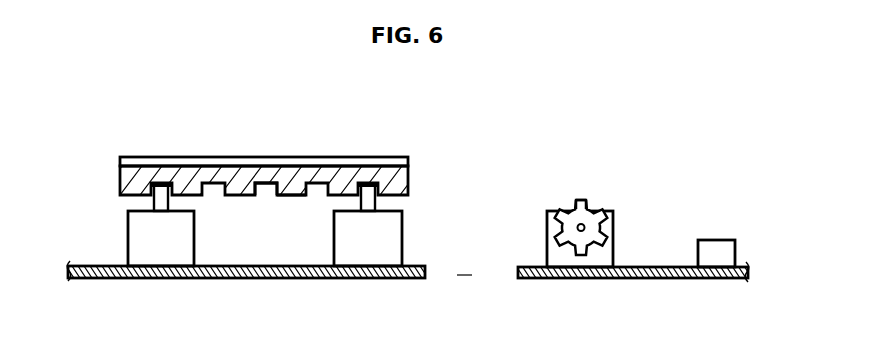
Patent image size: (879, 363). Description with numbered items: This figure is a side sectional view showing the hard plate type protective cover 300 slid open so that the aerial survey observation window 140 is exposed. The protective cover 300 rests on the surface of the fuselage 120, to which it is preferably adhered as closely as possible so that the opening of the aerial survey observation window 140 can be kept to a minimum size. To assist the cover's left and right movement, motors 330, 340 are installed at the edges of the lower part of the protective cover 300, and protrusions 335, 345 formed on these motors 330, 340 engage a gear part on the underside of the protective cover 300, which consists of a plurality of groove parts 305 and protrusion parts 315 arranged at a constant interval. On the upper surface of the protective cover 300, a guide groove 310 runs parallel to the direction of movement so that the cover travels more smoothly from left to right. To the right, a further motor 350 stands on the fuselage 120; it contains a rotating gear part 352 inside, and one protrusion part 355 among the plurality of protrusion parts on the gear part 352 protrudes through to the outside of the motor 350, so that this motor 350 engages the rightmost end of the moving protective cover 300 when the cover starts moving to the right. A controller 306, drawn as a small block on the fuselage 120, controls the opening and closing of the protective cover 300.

The fuselage 120 is at (88, 282).
The aerial survey observation window 140 is at (464, 275).
The protective cover 300 is at (410, 178).
The groove part 305 is at (262, 186).
The controller 306 is at (718, 246).
The guide groove 310 is at (188, 164).
The protrusion part 315 is at (290, 197).
The motor 330 is at (159, 248).
The protrusion 335 is at (152, 199).
The motor 340 is at (372, 248).
The protrusion 345 is at (372, 200).
The motor 350 is at (598, 240).
The rotating gear part 352 is at (596, 226).
The protrusion part 355 is at (581, 198).